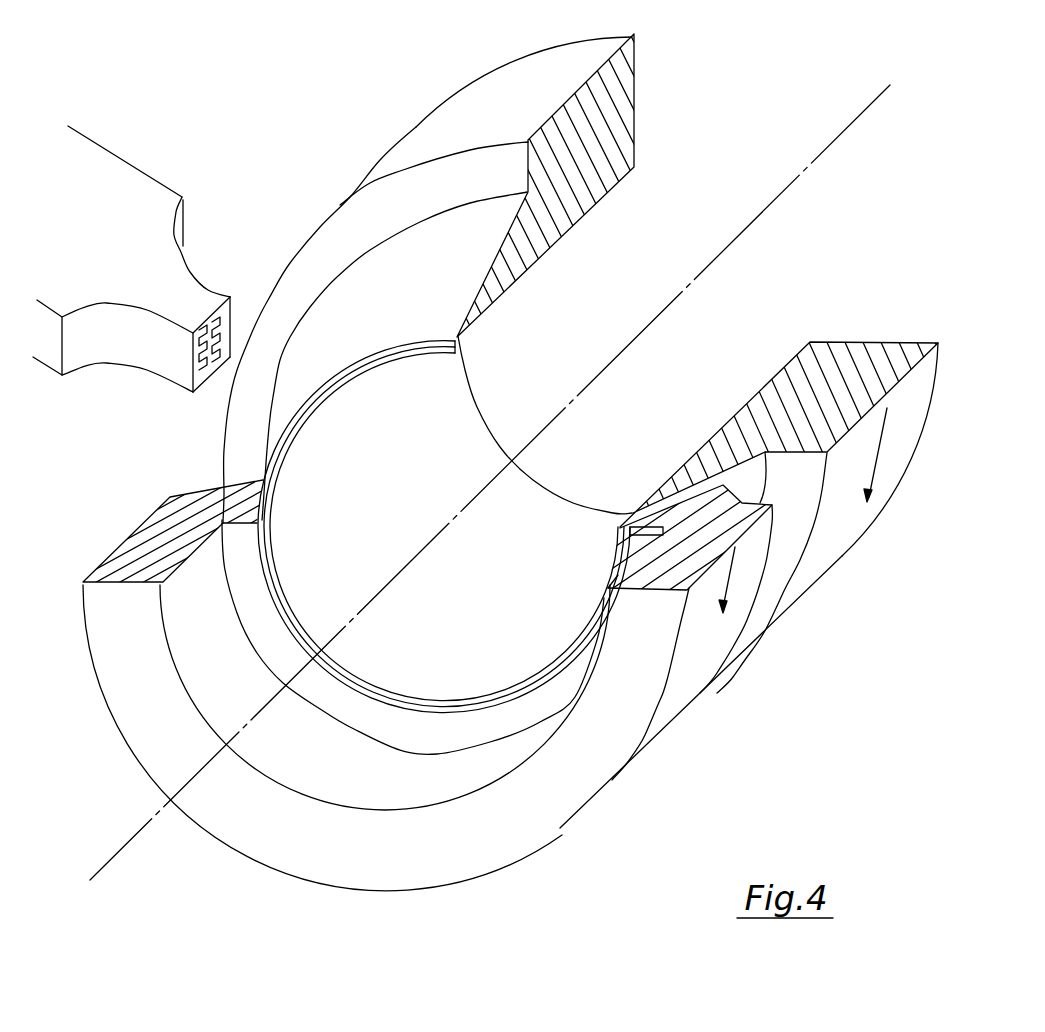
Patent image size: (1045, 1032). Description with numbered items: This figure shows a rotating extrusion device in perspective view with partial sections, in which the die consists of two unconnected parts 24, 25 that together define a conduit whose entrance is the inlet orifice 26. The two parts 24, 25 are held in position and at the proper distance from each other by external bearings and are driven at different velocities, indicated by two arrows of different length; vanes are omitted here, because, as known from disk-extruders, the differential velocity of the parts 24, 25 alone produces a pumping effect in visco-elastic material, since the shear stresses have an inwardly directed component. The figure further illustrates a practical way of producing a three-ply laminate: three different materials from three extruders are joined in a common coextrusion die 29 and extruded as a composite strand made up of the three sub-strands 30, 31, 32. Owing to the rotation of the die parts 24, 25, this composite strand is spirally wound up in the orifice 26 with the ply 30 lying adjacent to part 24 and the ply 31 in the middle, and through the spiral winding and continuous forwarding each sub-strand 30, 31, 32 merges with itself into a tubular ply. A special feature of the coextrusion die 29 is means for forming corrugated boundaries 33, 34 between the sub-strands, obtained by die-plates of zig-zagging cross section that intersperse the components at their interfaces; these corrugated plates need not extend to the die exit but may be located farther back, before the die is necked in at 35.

The die part 24 is at (847, 346).
The die part 25 is at (553, 812).
The inlet orifice 26 is at (208, 492).
The coextrusion die 29 is at (112, 162).
The sub-strand 30 is at (197, 357).
The sub-strand 31 is at (230, 353).
The sub-strand 32 is at (232, 313).
The corrugated boundary 33 is at (198, 333).
The corrugated boundary 34 is at (217, 320).
The neck-in 35 is at (183, 203).